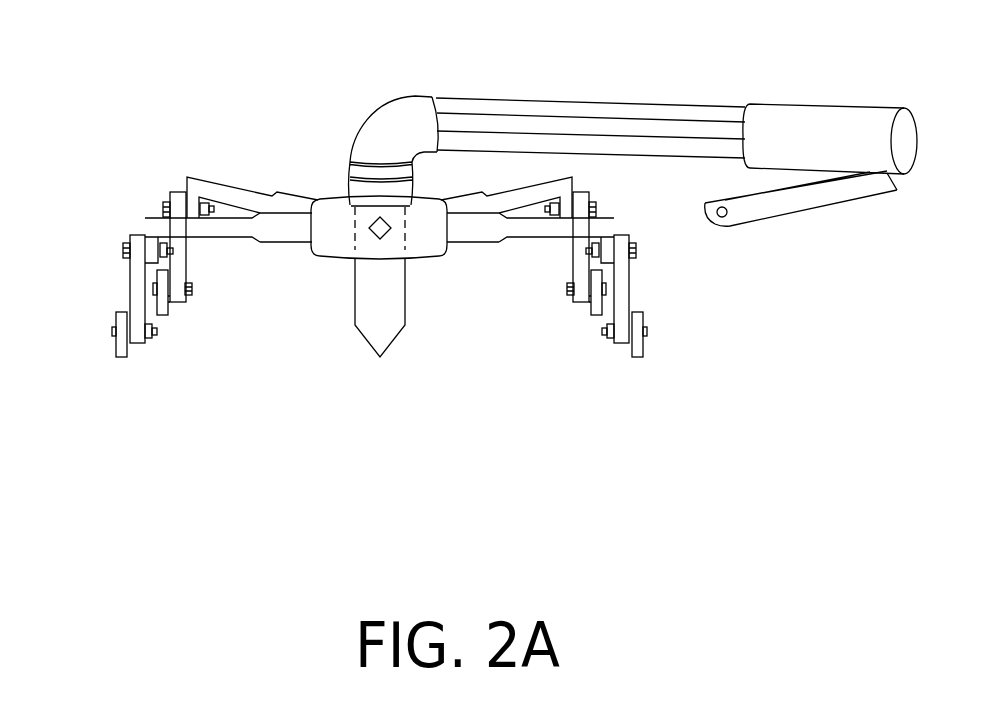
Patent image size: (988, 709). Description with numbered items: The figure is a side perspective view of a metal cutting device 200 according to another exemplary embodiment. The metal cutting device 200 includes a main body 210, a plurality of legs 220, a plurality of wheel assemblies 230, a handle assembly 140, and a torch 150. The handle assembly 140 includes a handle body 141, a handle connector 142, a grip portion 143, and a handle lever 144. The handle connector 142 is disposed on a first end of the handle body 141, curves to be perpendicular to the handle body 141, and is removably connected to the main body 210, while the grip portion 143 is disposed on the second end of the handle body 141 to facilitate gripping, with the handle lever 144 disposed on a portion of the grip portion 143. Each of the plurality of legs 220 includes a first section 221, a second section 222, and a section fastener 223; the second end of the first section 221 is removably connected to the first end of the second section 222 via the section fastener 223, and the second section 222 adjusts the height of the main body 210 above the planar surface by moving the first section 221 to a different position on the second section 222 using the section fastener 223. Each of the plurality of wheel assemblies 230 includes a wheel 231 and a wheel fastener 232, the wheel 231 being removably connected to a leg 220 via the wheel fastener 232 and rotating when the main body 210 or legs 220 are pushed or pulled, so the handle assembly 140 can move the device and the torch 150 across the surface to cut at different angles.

The metal cutting device 200 is at (250, 72).
The handle assembly 140 is at (693, 87).
The handle body 141 is at (502, 100).
The handle connector 142 is at (363, 128).
The grip portion 143 is at (837, 105).
The handle lever 144 is at (853, 197).
The torch 150 is at (373, 345).
The main body 210 is at (443, 258).
The plurality of legs 220 is at (162, 155).
The first section 221 is at (267, 242).
The second section 222 is at (131, 283).
The section fastener 223 is at (167, 253).
The plurality of wheel assemblies 230 is at (100, 368).
The wheel 231 is at (118, 323).
The wheel fastener 232 is at (153, 330).